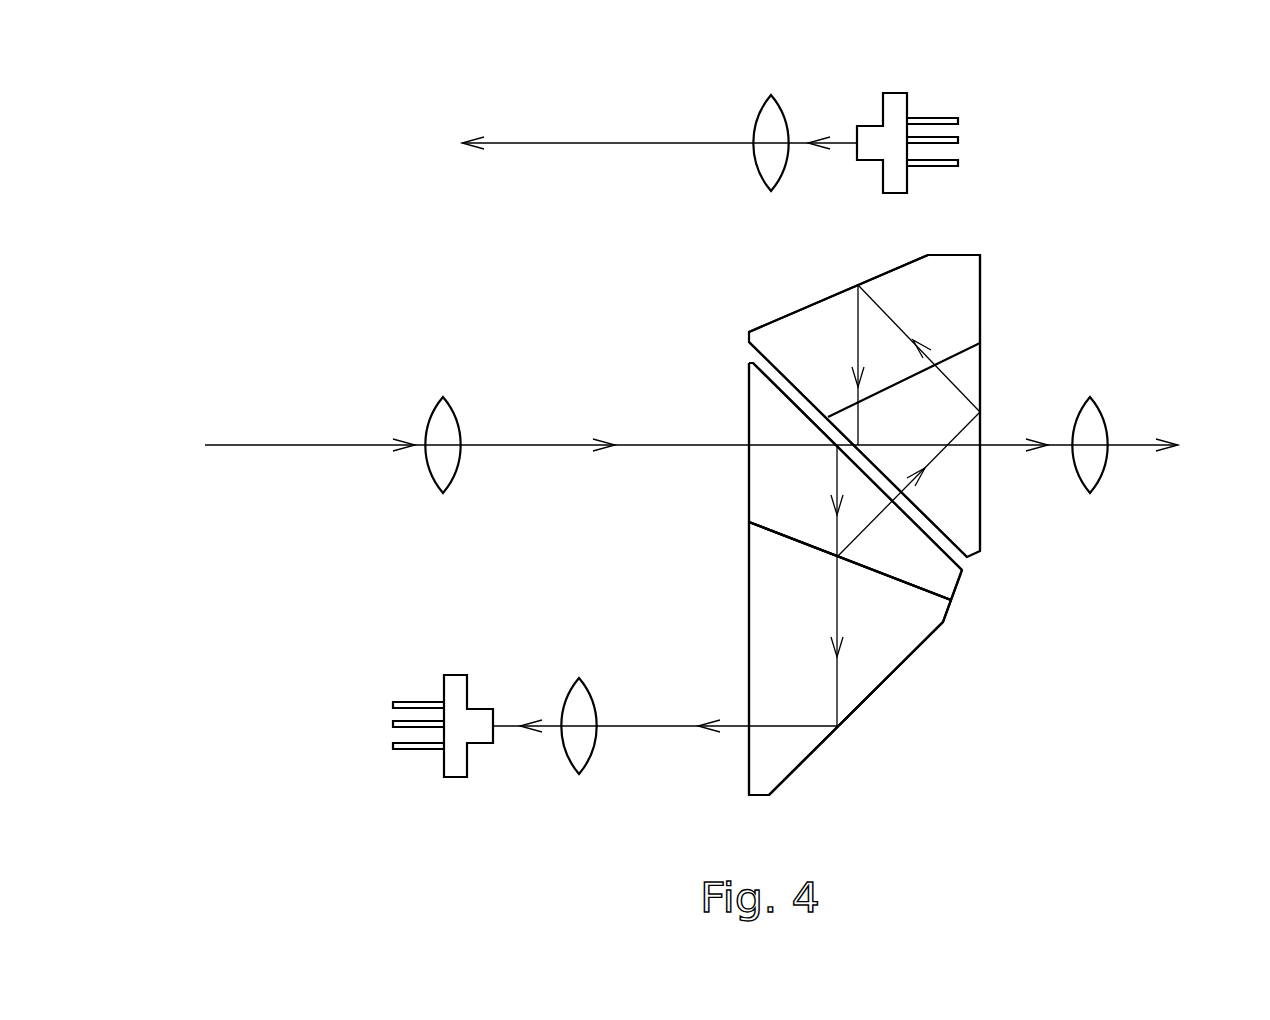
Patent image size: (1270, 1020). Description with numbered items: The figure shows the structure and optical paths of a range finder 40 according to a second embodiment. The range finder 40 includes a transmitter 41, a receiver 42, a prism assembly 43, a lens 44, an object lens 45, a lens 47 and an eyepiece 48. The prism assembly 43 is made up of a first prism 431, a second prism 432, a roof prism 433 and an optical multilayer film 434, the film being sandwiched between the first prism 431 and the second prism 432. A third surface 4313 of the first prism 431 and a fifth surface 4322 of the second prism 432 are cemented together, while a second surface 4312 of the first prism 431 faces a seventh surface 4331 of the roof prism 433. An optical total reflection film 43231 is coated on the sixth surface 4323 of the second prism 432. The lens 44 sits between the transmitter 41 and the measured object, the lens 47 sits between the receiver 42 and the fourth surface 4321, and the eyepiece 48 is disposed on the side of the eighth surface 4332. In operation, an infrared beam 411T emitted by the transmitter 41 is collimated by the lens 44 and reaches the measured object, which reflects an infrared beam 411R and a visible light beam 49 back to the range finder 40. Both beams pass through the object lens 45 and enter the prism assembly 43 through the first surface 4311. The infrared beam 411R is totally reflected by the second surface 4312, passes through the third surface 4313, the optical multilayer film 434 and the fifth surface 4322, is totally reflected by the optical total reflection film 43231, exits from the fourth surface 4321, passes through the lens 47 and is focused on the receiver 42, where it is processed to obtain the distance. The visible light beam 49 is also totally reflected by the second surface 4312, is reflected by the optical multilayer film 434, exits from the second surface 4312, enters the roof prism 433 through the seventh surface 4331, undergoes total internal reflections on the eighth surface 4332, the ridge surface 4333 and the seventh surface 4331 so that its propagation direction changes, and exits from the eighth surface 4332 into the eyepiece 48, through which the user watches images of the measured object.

The range finder 40 is at (284, 177).
The transmitter 41 is at (893, 105).
The infrared beam 411T is at (847, 143).
The infrared beam 411R is at (262, 445).
The receiver 42 is at (447, 685).
The prism assembly 43 is at (1128, 545).
The first prism 431 is at (828, 463).
The first surface 4311 is at (749, 410).
The second surface 4312 is at (778, 390).
The third surface 4313 is at (773, 530).
The second prism 432 is at (930, 684).
The fourth surface 4321 is at (750, 752).
The fifth surface 4322 is at (893, 580).
The sixth surface 4323 is at (883, 732).
The optical total reflection film 43231 is at (818, 747).
The roof prism 433 is at (910, 383).
The seventh surface 4331 is at (789, 374).
The eighth surface 4332 is at (980, 298).
The ridge surface 4333 is at (890, 272).
The optical multilayer film 434 is at (927, 590).
The lens 44 is at (765, 122).
The object lens 45 is at (425, 415).
The lens 47 is at (574, 678).
The eyepiece 48 is at (1095, 422).
The visible light beam 49 is at (1003, 445).